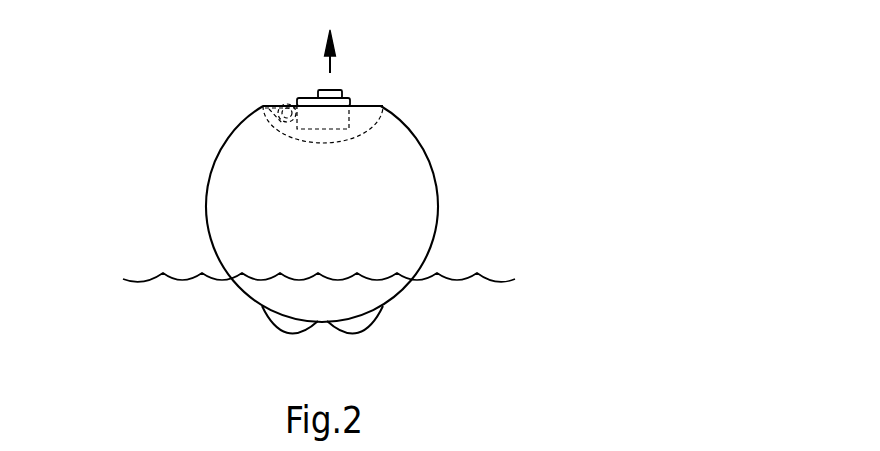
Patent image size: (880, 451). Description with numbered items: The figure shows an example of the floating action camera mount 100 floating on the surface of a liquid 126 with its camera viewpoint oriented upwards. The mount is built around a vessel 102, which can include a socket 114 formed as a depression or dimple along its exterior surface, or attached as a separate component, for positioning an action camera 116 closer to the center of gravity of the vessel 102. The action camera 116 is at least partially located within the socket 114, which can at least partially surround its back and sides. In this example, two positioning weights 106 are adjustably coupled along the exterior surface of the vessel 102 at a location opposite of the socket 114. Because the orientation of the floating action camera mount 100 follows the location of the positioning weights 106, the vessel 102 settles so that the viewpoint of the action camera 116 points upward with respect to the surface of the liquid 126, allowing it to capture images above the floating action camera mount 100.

The floating action camera mount 100 is at (121, 43).
The vessel 102 is at (223, 157).
The positioning weight 106 is at (285, 337).
The socket 114 is at (383, 105).
The action camera 116 is at (327, 123).
The liquid 126 is at (494, 278).